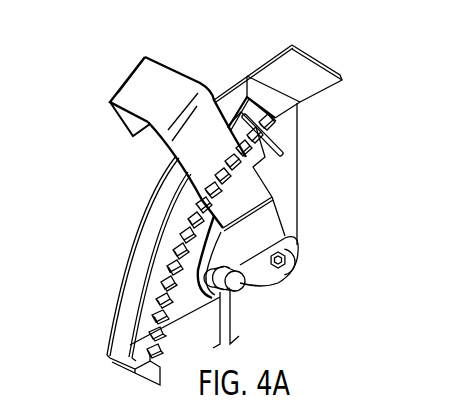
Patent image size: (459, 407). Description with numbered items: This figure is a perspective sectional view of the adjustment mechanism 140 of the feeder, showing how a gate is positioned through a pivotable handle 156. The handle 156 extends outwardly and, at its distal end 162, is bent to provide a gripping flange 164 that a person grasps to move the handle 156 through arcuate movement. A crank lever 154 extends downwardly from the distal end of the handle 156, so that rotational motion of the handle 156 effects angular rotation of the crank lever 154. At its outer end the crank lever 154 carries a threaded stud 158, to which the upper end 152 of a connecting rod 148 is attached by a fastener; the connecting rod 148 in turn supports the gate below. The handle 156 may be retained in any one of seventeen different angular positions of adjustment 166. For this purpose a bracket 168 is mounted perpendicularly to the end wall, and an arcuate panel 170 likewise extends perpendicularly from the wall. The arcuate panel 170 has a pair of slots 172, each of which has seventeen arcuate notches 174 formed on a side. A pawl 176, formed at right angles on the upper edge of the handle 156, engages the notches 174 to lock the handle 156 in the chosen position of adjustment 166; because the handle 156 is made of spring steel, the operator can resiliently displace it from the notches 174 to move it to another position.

The adjustment mechanism 140 is at (346, 50).
The connecting rod 148 is at (229, 315).
The upper end 152 is at (238, 329).
The crank lever 154 is at (219, 333).
The pivotable handle 156 is at (222, 118).
The threaded stud 158 is at (297, 240).
The distal end 162 is at (111, 127).
The gripping flange 164 is at (116, 82).
The angular positions of adjustment 166 is at (168, 231).
The bracket 168 is at (285, 192).
The arcuate panel 170 is at (138, 260).
The slots 172 is at (152, 290).
The arcuate notches 174 is at (155, 326).
The pawl 176 is at (281, 147).